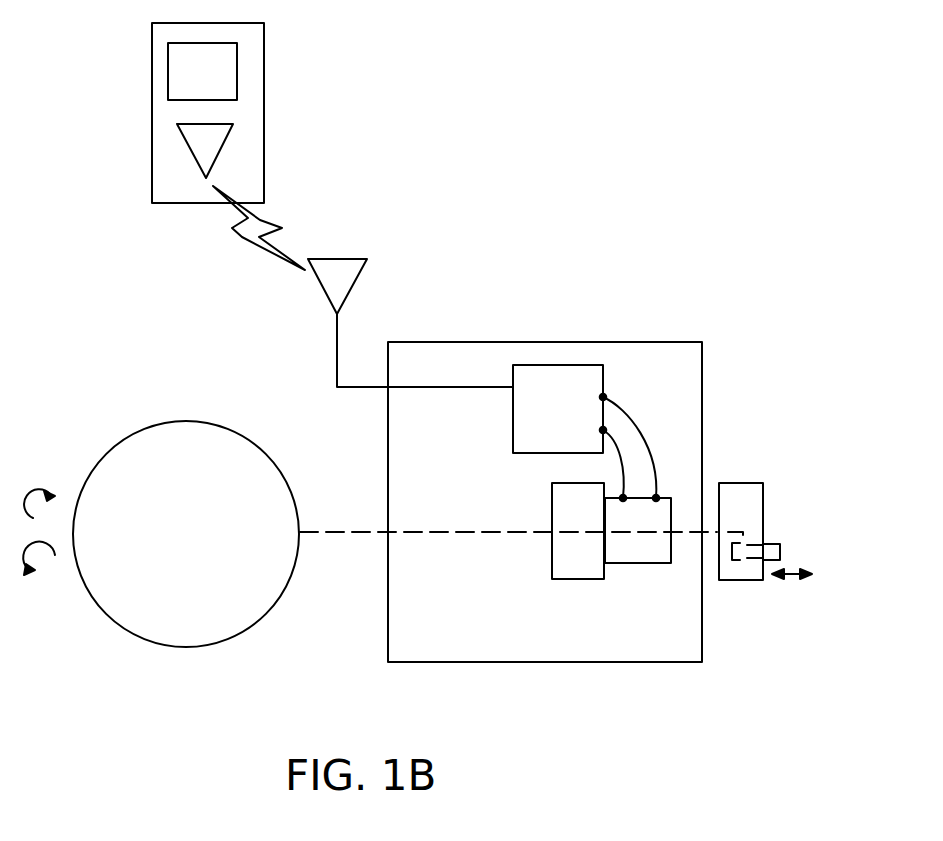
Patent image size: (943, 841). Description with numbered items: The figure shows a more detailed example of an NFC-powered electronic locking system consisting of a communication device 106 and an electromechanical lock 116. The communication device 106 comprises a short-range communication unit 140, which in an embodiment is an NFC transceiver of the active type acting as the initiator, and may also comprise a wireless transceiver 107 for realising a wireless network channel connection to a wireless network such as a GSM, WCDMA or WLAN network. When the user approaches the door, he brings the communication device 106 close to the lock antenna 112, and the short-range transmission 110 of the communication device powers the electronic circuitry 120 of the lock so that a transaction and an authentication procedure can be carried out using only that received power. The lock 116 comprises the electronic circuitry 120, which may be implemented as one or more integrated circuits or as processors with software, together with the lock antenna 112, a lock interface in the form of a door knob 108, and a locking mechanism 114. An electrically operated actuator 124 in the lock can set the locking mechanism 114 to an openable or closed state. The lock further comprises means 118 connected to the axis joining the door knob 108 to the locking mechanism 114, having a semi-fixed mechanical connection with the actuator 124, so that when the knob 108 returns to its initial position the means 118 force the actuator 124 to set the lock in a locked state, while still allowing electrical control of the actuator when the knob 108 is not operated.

The communication device 106 is at (264, 90).
The wireless transceiver 107 is at (168, 72).
The short-range communication unit 140 is at (225, 143).
The short-range transmission 110 is at (243, 235).
The lock antenna 112 is at (330, 259).
The electromechanical lock 116 is at (643, 342).
The electronic circuitry 120 is at (530, 365).
The electrically operated actuator 124 is at (617, 564).
The means configured to control the actuator mechanically 118 is at (605, 568).
The locking mechanism 114 is at (738, 580).
The lock interface (door knob) 108 is at (183, 647).